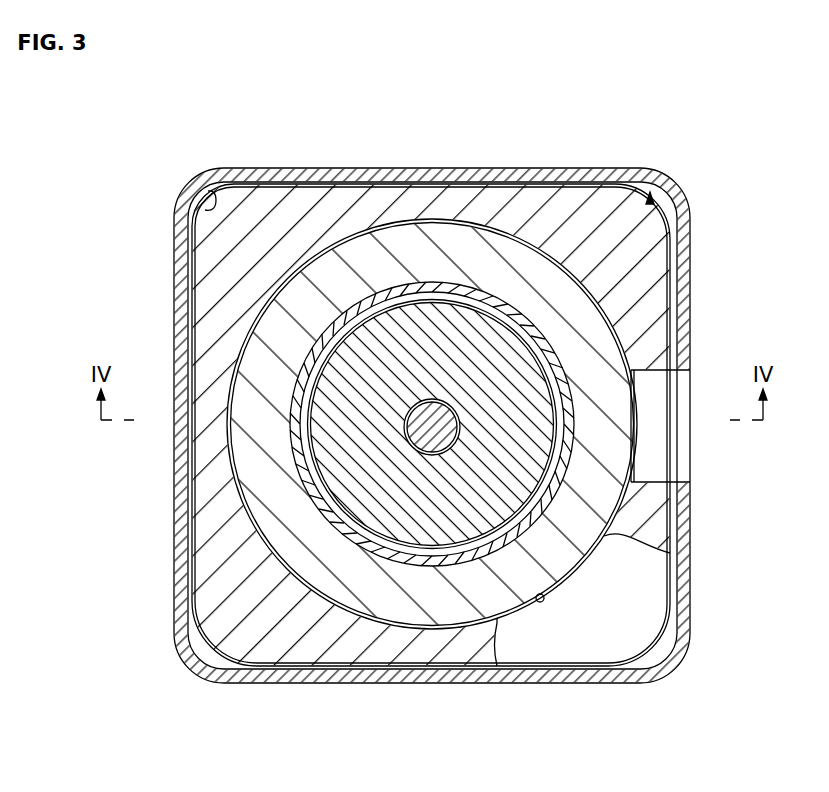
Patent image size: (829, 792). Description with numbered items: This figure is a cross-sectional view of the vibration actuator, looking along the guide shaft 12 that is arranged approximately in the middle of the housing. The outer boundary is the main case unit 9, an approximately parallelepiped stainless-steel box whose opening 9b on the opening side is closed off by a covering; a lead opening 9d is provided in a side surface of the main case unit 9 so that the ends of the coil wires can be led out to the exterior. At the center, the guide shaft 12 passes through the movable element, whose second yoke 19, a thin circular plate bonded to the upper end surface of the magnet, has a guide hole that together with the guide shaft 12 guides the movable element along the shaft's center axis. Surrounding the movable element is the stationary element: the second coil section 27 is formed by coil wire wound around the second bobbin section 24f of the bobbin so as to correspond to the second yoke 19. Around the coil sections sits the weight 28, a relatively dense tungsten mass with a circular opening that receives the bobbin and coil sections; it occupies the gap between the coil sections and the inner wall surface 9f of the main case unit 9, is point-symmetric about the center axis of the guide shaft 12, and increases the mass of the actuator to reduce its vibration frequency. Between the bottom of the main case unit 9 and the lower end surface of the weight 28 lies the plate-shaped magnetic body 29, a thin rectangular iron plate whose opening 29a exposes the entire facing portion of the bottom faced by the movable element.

The main case unit 9 is at (689, 298).
The opening 9b is at (656, 209).
The lead opening 9d is at (682, 376).
The inner wall surface 9f is at (205, 210).
The guide shaft 12 is at (431, 431).
The second yoke 19 is at (434, 332).
The second bobbin section 24f is at (365, 548).
The second coil section 27 is at (565, 558).
The weight 28 is at (386, 647).
The plate-shaped magnetic body 29 is at (632, 617).
The opening 29a is at (547, 603).